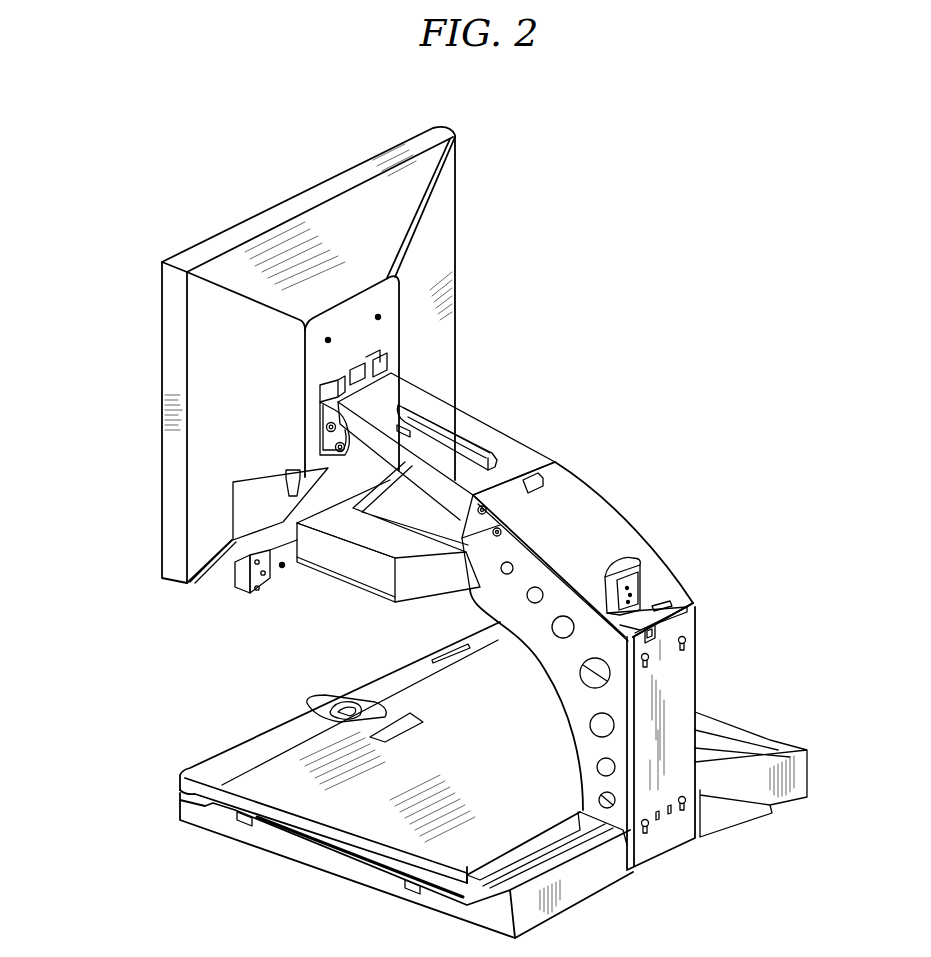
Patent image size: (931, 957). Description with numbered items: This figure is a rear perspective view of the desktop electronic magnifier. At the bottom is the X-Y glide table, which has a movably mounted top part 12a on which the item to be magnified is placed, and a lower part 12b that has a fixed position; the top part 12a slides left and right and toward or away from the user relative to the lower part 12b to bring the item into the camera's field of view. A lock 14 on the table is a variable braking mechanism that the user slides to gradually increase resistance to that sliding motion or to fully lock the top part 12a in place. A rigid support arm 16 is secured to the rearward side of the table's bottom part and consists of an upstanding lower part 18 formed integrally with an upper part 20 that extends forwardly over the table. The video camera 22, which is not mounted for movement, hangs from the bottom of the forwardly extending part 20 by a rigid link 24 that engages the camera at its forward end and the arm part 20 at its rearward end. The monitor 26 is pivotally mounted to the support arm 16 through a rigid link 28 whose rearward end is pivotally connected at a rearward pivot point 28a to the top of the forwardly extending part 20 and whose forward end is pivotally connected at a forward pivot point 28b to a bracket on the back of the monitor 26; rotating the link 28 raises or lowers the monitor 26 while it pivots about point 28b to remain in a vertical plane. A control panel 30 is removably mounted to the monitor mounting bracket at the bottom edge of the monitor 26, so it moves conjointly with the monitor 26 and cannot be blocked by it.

The top part of table 12a is at (280, 780).
The lower part of table 12b is at (320, 857).
The lock 14 is at (333, 702).
The rigid support arm 16 is at (690, 575).
The upstanding lower part 18 is at (682, 683).
The forwardly extending upper part 20 is at (520, 550).
The video camera 22 is at (363, 563).
The rigid link 24 is at (470, 607).
The monitor 26 is at (143, 387).
The rigid link 28 is at (462, 423).
The rearward pivot point 28a is at (480, 512).
The forward pivot point 28b is at (331, 427).
The control panel 30 is at (238, 598).